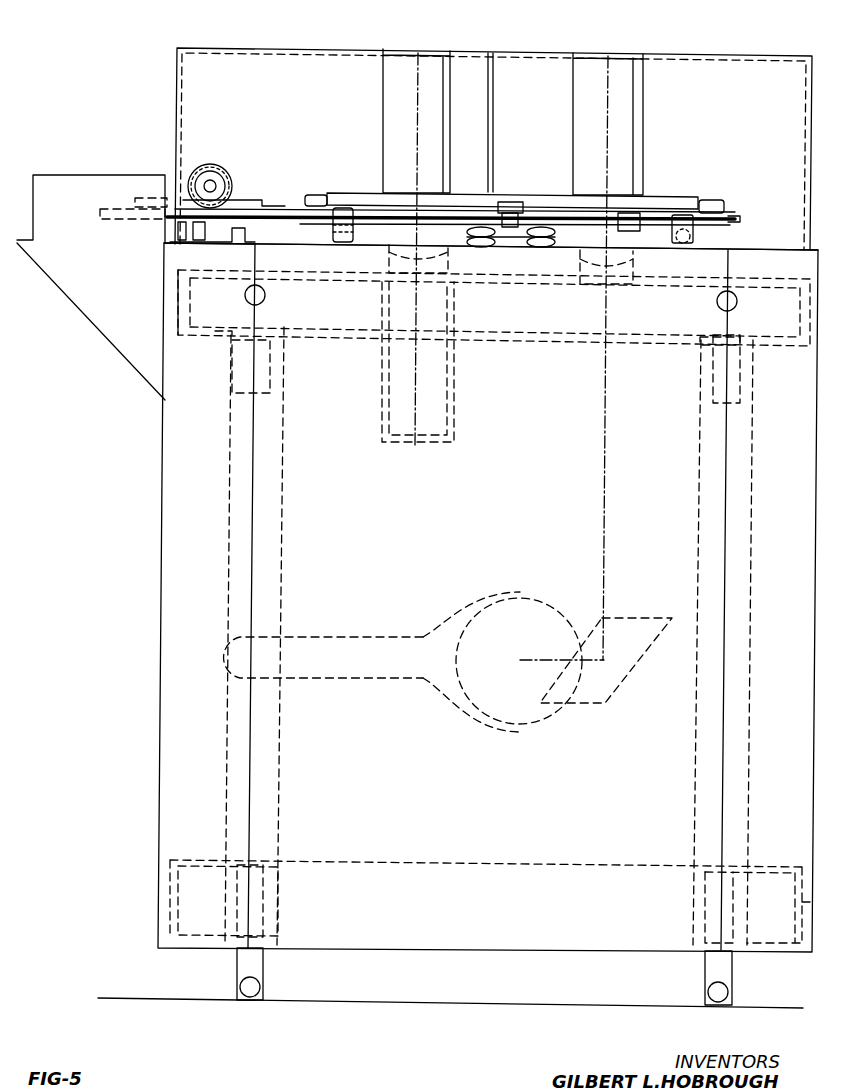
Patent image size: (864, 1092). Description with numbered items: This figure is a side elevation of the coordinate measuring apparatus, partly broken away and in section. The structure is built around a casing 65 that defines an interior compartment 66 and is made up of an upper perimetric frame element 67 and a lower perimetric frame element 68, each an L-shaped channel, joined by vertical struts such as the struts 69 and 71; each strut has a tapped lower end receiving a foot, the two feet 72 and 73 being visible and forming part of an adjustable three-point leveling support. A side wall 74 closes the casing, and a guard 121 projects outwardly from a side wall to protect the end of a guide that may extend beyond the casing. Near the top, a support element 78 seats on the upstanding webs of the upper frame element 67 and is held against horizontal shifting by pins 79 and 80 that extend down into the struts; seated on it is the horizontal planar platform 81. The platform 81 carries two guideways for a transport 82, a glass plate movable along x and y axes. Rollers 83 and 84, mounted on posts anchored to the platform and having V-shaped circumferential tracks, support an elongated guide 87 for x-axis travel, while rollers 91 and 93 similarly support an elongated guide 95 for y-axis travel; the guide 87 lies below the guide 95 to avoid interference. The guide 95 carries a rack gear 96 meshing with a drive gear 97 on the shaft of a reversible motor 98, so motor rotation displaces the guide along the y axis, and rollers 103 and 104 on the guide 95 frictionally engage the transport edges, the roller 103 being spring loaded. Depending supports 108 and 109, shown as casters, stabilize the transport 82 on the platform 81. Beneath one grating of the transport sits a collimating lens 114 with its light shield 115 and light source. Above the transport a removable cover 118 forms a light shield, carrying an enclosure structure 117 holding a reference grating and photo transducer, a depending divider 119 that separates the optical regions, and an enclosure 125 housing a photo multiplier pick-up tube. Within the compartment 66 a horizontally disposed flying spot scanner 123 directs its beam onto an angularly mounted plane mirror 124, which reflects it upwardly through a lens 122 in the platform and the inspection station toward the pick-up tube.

The casing 65 is at (158, 605).
The compartment 66 is at (346, 765).
The upper perimetric frame element 67 is at (220, 340).
The lower perimetric frame element 68 is at (173, 900).
The strut 69 is at (698, 812).
The strut 71 is at (228, 787).
The foot 72 is at (712, 972).
The foot 73 is at (262, 972).
The side wall 74 is at (340, 531).
The support element 78 is at (327, 280).
The pin 79 is at (713, 367).
The pin 80 is at (242, 392).
The platform 81 is at (180, 275).
The transport 82 is at (342, 190).
The roller 83 is at (535, 228).
The roller 84 is at (463, 233).
The elongated guide 87 is at (518, 250).
The roller 91 is at (643, 209).
The roller 93 is at (195, 233).
The elongated guide 95 is at (733, 220).
The rack gear 96 is at (245, 200).
The drive gear 97 is at (212, 178).
The reversible motor 98 is at (222, 167).
The roller 103 is at (722, 201).
The roller 104 is at (310, 195).
The depending support 108 is at (693, 233).
The depending support 109 is at (333, 227).
The collimating lens 114 is at (436, 263).
The light shield 115 is at (446, 433).
The enclosure structure 117 is at (414, 55).
The removable cover 118 is at (703, 53).
The divider 119 is at (493, 83).
The guard 121 is at (108, 323).
The lens 122 is at (617, 281).
The flying spot scanner 123 is at (477, 720).
The plane mirror 124 is at (618, 678).
The enclosure 125 is at (637, 130).